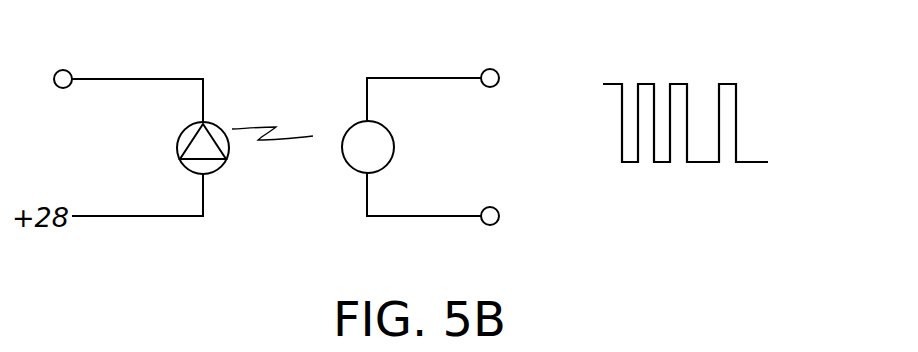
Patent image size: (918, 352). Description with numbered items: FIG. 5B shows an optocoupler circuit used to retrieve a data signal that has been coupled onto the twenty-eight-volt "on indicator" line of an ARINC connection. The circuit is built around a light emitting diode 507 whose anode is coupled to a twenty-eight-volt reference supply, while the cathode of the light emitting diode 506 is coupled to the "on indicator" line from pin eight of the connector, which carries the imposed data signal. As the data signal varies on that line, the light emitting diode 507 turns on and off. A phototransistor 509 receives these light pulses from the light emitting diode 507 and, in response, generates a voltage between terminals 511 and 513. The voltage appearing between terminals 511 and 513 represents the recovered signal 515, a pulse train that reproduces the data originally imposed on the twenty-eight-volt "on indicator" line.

The cathode of the light emitting diode 506 is at (67, 71).
The light emitting diode 507 is at (210, 113).
The phototransistor 509 is at (343, 157).
The terminal 511 is at (499, 73).
The terminal 513 is at (500, 215).
The recovered signal 515 is at (737, 115).